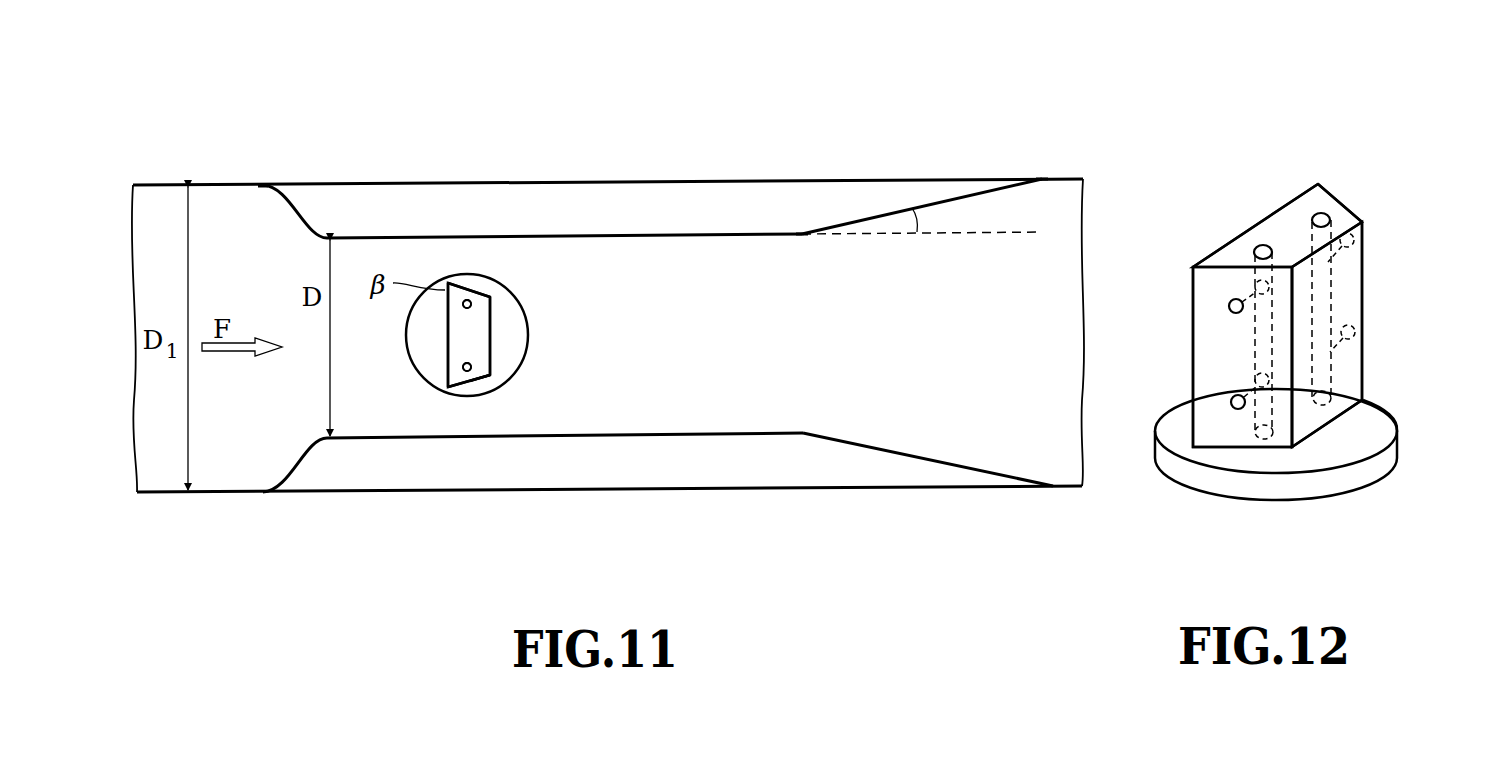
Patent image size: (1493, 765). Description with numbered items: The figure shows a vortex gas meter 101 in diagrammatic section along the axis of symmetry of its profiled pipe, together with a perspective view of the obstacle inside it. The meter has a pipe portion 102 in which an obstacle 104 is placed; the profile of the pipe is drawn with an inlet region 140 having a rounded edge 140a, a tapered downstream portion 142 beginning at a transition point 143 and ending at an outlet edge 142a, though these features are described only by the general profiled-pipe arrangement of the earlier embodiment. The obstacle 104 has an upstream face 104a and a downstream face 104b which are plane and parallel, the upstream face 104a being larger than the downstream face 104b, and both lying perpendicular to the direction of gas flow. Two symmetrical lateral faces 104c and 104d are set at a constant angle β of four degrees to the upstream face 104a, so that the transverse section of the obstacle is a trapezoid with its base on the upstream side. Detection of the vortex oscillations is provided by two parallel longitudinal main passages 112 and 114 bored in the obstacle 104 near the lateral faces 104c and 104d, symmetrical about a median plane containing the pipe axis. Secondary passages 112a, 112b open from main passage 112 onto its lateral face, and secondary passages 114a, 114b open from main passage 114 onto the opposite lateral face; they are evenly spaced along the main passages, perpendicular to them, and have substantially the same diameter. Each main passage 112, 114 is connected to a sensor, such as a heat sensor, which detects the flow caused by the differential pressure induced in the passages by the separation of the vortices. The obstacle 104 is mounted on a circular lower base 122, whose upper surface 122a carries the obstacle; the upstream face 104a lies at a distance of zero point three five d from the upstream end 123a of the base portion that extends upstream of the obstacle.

In FIG. 11, the vortex gas meter 101 is at (308, 138).
In FIG. 11, the pipe portion 102 is at (655, 233).
In FIG. 11, the obstacle 104 is at (497, 325).
In FIG. 12, the obstacle 104 is at (1260, 183).
In FIG. 11, the upstream face 104a is at (450, 352).
In FIG. 12, the upstream face 104a is at (1292, 197).
In FIG. 11, the downstream face 104b is at (492, 340).
In FIG. 12, the downstream face 104b is at (1345, 287).
In FIG. 11, the lateral face 104c is at (472, 290).
In FIG. 12, the lateral face 104c is at (1350, 210).
In FIG. 11, the lateral face 104d is at (497, 388).
In FIG. 12, the lateral face 104d is at (1207, 340).
In FIG. 11, the main passage 112 is at (490, 310).
In FIG. 12, the main passage 112 is at (1324, 213).
In FIG. 11, the secondary passage 112a is at (469, 298).
In FIG. 12, the secondary passage 112a is at (1363, 235).
In FIG. 12, the secondary passage 112b is at (1353, 328).
In FIG. 11, the main passage 114 is at (463, 369).
In FIG. 12, the main passage 114 is at (1260, 247).
In FIG. 11, the secondary passage 114a is at (467, 372).
In FIG. 12, the secondary passage 114a is at (1230, 303).
In FIG. 12, the secondary passage 114b is at (1238, 408).
In FIG. 12, the lower base 122 is at (1398, 442).
In FIG. 11, the base disk mounting surface 122a is at (483, 385).
In FIG. 12, the base disk mounting surface 122a is at (1378, 415).
In FIG. 11, the upstream end 123a is at (407, 335).
In FIG. 11, the inlet constriction 140 is at (315, 195).
In FIG. 11, the inlet rounded edge 140a is at (290, 197).
In FIG. 11, the tapered diffuser portion 142 is at (932, 197).
In FIG. 11, the diffuser outlet edge 142a is at (1002, 193).
In FIG. 11, the diffuser start point 143 is at (800, 225).